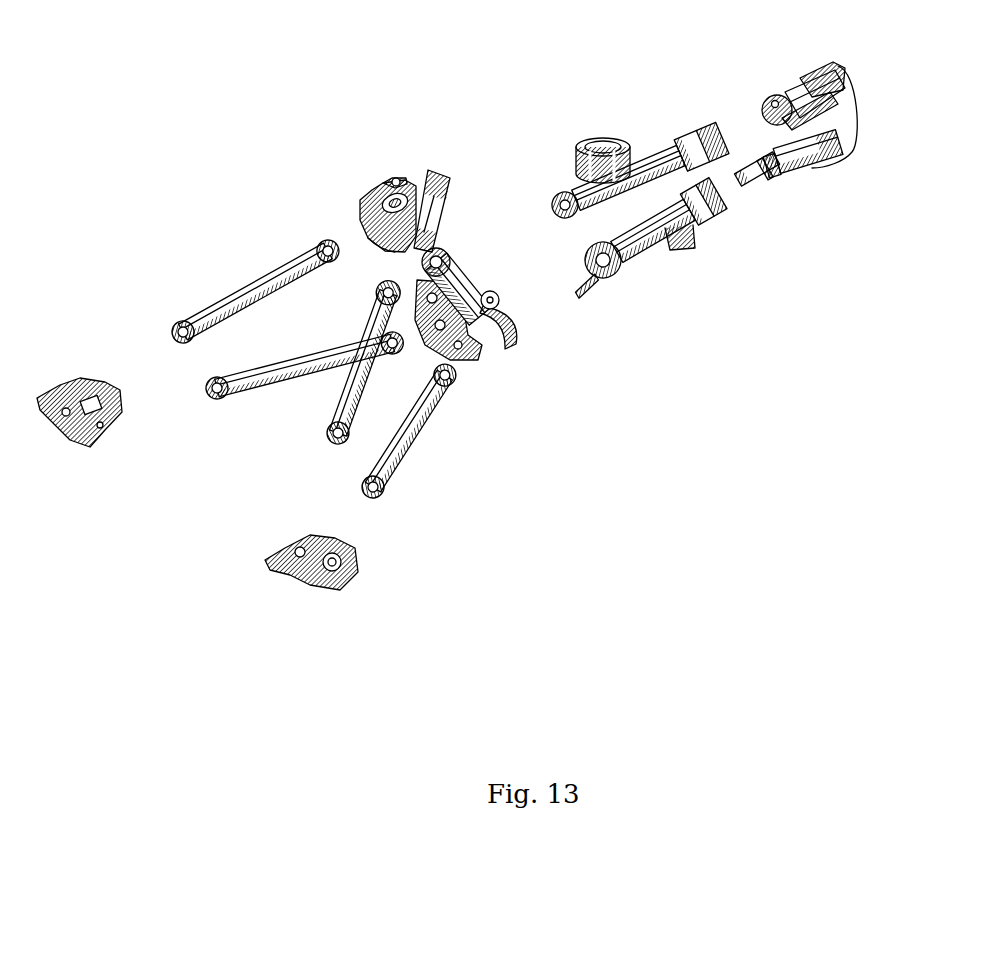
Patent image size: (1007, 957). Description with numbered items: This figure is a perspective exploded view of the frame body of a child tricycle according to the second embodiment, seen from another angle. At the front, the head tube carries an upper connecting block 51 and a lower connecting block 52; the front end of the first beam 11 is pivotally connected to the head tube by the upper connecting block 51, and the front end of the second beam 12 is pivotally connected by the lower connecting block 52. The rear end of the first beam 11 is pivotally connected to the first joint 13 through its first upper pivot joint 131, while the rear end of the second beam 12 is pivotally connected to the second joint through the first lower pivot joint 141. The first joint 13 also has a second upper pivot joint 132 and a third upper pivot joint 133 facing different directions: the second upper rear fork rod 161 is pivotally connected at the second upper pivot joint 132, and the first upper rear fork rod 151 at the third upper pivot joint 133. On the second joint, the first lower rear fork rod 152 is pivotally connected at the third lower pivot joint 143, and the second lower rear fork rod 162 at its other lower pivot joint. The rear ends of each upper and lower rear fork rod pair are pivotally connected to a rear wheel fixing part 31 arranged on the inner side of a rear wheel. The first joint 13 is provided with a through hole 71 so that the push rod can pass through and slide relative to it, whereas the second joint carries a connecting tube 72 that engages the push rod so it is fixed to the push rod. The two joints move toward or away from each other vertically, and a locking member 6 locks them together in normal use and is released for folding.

The first joint 13 is at (390, 199).
The through hole 71 is at (392, 181).
The first upper pivot joint 131 is at (432, 185).
The second upper pivot joint 132 is at (360, 205).
The third upper pivot joint 133 is at (390, 266).
The connecting tube 72 is at (455, 266).
The first lower pivot joint 141 is at (500, 292).
The third lower pivot joint 143 is at (497, 357).
The locking member 6 is at (490, 300).
The first upper rear fork rod 151 is at (455, 345).
The first lower rear fork rod 152 is at (417, 443).
The second upper rear fork rod 161 is at (227, 297).
The second lower rear fork rod 162 is at (275, 387).
The rear wheel fixing part 31 is at (87, 447).
The first beam 11 is at (660, 143).
The second beam 12 is at (657, 247).
The upper connecting block 51 is at (788, 85).
The lower connecting block 52 is at (817, 173).